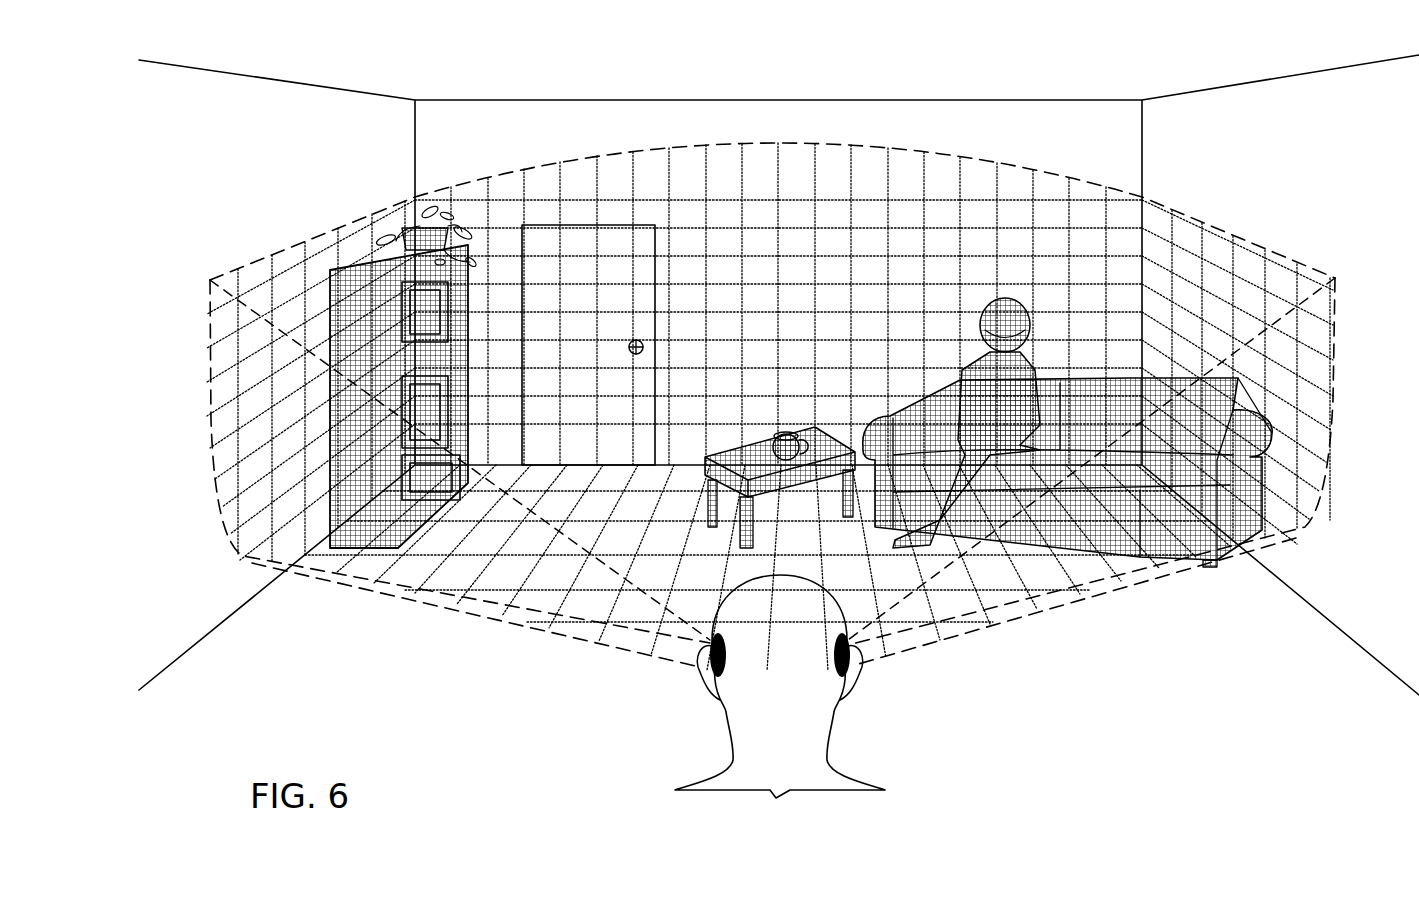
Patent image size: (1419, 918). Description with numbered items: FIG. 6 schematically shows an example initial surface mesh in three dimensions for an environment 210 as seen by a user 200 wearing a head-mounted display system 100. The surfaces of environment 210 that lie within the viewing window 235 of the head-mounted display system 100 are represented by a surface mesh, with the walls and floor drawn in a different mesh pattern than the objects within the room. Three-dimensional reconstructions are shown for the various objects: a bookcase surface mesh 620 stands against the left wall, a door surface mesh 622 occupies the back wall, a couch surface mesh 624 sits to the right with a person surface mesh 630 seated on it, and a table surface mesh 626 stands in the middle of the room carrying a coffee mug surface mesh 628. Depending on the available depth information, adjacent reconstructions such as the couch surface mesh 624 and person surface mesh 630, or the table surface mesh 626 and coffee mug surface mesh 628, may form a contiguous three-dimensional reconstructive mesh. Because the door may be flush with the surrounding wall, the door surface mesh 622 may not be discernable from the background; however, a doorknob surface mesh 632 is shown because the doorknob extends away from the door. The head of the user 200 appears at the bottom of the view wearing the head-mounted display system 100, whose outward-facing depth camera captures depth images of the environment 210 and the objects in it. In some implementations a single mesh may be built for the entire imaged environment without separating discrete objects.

The head-mounted display system 100 is at (712, 690).
The user 200 is at (795, 663).
The environment 210 is at (1123, 80).
The viewing window 235 is at (1159, 187).
The bookcase surface mesh 620 is at (378, 312).
The door surface mesh 622 is at (598, 308).
The couch surface mesh 624 is at (1094, 416).
The table surface mesh 626 is at (823, 485).
The coffee mug surface mesh 628 is at (790, 432).
The person surface mesh 630 is at (1028, 310).
The doorknob surface mesh 632 is at (645, 353).